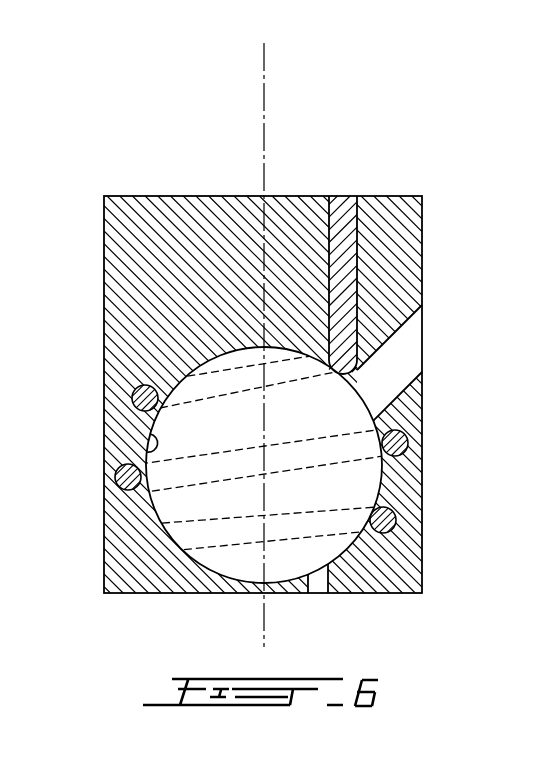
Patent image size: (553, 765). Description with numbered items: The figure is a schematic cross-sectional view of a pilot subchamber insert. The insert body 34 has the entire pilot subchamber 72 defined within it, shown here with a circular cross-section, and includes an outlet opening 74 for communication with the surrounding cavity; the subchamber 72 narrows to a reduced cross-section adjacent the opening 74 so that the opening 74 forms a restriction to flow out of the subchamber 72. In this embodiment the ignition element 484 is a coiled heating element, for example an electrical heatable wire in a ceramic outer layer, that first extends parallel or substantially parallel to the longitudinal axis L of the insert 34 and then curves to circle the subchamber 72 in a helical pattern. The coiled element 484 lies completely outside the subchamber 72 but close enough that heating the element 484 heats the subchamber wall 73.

The insert body 34 is at (422, 196).
The ignition element 484 is at (342, 272).
The pilot subchamber 72 is at (324, 423).
The subchamber wall 73 is at (152, 443).
The outlet opening 74 is at (316, 595).
The longitudinal axis L is at (264, 110).